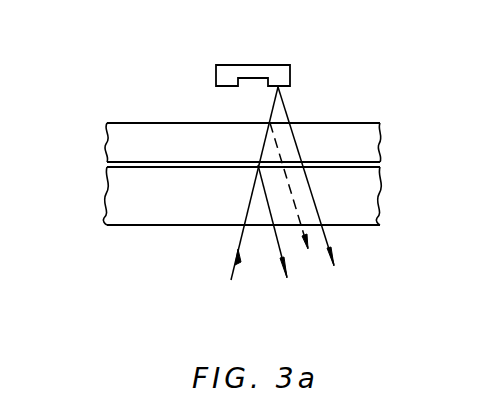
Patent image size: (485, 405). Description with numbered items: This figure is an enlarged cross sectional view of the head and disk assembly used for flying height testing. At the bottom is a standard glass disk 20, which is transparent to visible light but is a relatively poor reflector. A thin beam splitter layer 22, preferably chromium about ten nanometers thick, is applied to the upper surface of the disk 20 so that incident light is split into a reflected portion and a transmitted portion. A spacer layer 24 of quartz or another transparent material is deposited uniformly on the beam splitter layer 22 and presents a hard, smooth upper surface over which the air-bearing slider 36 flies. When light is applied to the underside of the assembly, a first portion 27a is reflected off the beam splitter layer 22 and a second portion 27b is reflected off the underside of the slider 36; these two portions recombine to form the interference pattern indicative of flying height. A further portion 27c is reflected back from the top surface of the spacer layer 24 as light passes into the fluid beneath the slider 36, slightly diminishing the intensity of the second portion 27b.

The air-bearing slider 36 is at (252, 65).
The spacer layer 24 is at (125, 136).
The beam splitter layer 22 is at (108, 172).
The glass disk 20 is at (118, 213).
The first portion of light 27a is at (278, 253).
The second portion of light 27b is at (323, 233).
The portion of light reflected at top of spacer layer 27c is at (308, 243).